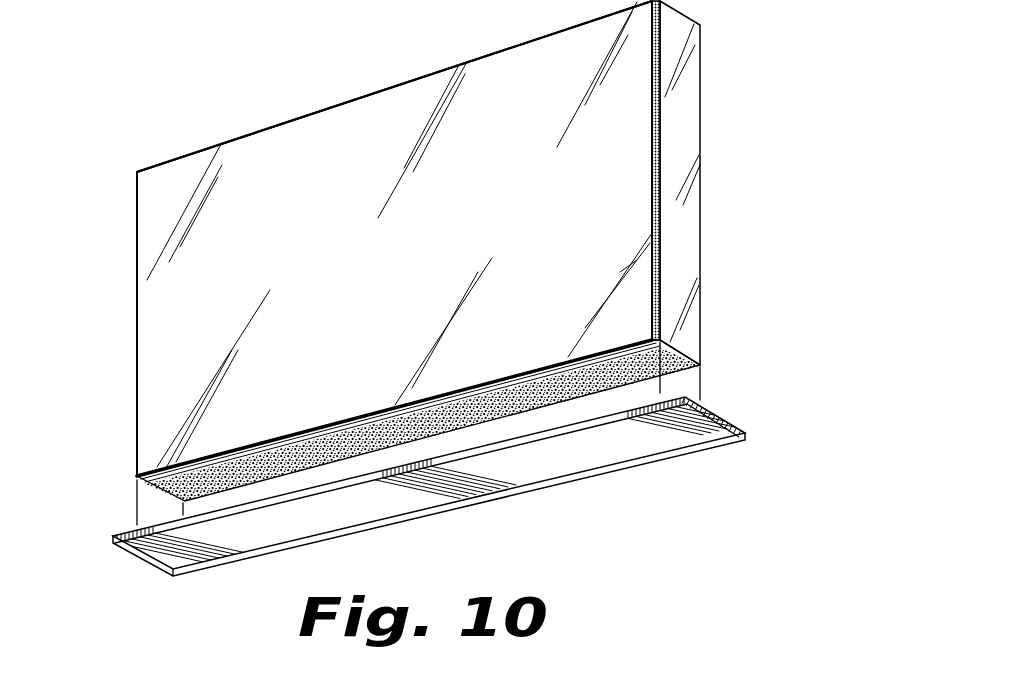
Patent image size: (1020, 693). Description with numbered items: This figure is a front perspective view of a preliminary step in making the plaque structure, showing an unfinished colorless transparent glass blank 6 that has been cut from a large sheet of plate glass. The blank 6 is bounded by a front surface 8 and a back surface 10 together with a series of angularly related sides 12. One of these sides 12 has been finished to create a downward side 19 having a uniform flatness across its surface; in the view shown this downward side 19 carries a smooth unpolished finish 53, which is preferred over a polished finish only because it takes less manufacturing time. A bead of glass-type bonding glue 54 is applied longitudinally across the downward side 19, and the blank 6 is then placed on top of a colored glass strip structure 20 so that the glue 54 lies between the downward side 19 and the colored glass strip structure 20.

The unfinished colorless transparent glass blank 6 is at (232, 172).
The front surface 8 is at (331, 304).
The back surface 10 is at (700, 80).
The angularly related sides 12 is at (272, 127).
The downward side 19 is at (683, 368).
The colored glass strip structure 20 is at (742, 424).
The smooth unpolished finish 53 is at (418, 158).
The glass-type bonding glue 54 is at (552, 378).